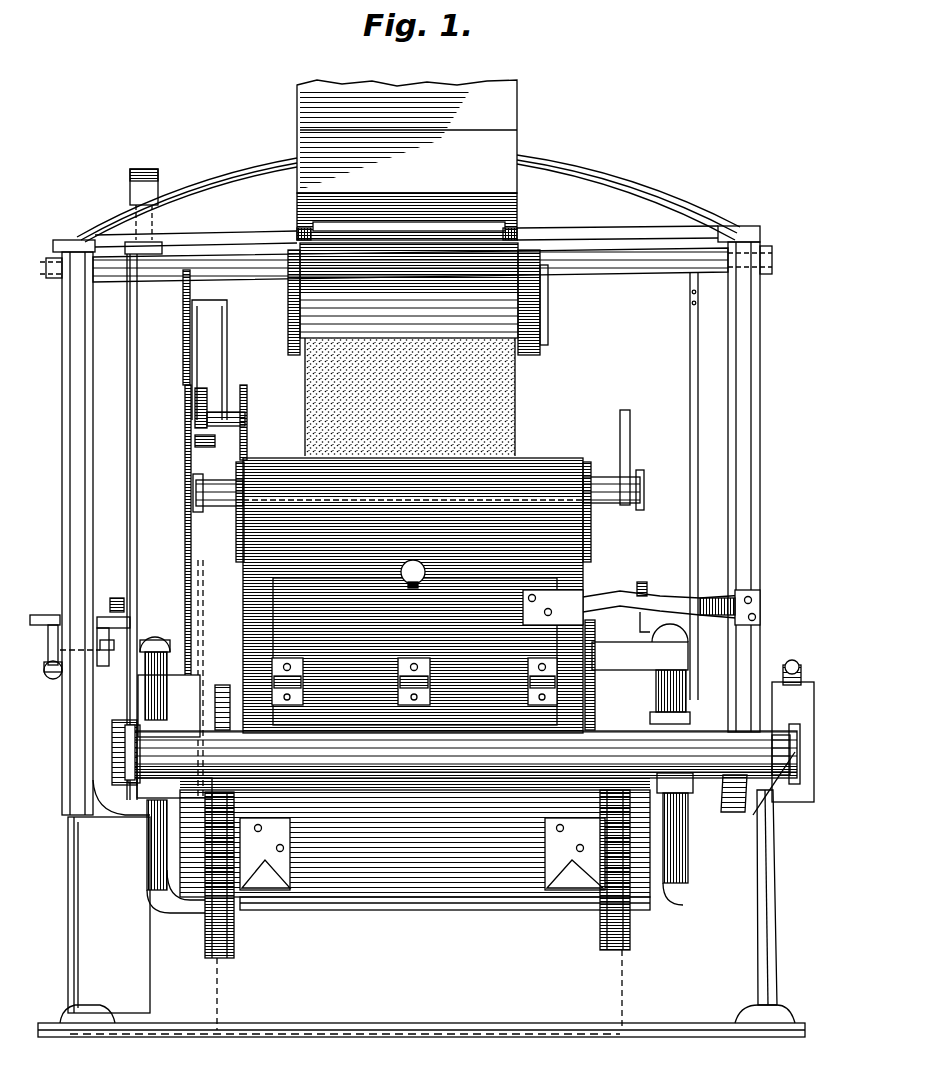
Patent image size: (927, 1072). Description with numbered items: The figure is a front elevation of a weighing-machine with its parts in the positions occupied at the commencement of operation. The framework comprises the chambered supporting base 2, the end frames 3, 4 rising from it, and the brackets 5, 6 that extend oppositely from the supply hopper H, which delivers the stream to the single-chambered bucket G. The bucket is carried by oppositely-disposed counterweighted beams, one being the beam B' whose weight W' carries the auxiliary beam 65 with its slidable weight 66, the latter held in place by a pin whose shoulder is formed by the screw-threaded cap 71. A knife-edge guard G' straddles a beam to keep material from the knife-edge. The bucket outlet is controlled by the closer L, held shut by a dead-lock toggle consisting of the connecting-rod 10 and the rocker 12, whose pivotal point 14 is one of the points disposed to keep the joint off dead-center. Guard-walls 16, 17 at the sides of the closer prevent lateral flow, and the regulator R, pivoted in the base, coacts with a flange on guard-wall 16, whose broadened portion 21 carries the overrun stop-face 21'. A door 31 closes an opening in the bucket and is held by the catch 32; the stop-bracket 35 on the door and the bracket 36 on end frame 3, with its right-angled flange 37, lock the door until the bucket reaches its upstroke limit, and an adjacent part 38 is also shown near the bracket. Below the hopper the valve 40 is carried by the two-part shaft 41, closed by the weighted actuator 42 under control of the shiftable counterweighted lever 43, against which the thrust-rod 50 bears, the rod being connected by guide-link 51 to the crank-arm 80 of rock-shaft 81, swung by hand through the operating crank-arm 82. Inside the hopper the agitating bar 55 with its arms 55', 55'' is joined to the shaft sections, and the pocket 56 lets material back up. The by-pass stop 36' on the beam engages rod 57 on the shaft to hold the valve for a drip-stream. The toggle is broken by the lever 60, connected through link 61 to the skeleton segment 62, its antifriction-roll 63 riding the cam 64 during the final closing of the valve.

The supporting base 2 is at (421, 927).
The end frame 3 is at (757, 445).
The end frame 4 is at (83, 432).
The bracket 5 is at (606, 190).
The bracket 6 is at (240, 190).
The connecting-rod 10 is at (205, 603).
The rocker 12 is at (185, 530).
The pivotal point 14 is at (193, 492).
The guard-wall 16 is at (240, 728).
The guard-wall 17 is at (592, 710).
The broadened portion 21 is at (164, 754).
The overrun curved stop-face 21' is at (222, 691).
The door 31 is at (463, 590).
The catch 32 is at (408, 588).
The stop-bracket 35 is at (590, 596).
The bracket 36 is at (671, 598).
The by-pass stop 36' is at (675, 818).
The right-angled flange 37 is at (643, 632).
The pin 38 is at (642, 582).
The valve 40 is at (540, 330).
The two-part supporting-shaft 41 is at (226, 255).
The weighted valve-closing actuator 42 is at (138, 192).
The shiftable counterweighted lever 43 is at (125, 735).
The thrust-rod 50 is at (133, 466).
The guide-link 51 is at (120, 598).
The agitating device 55 is at (409, 198).
The arm 55' is at (288, 222).
The arm 55'' is at (536, 215).
The pocket 56 is at (358, 215).
The rod 57 is at (690, 380).
The lever 60 is at (215, 447).
The link 61 is at (225, 362).
The skeleton segment 62 is at (183, 325).
The antifriction-roll 63 is at (195, 441).
The cam 64 is at (195, 405).
The auxiliary beam 65 is at (757, 796).
The slidable weight 66 is at (797, 803).
The screw-threaded cap 71 is at (792, 685).
The crank-arm 80 is at (110, 640).
The rock-shaft 81 is at (75, 665).
The operating crank-arm 82 is at (45, 615).
The supply hopper H is at (512, 143).
The bucket G is at (430, 571).
The knife-edge guard G' is at (392, 794).
The counterweighted beam B' is at (139, 678).
The weight W' is at (465, 757).
The closer L is at (405, 897).
The regulator R is at (215, 988).